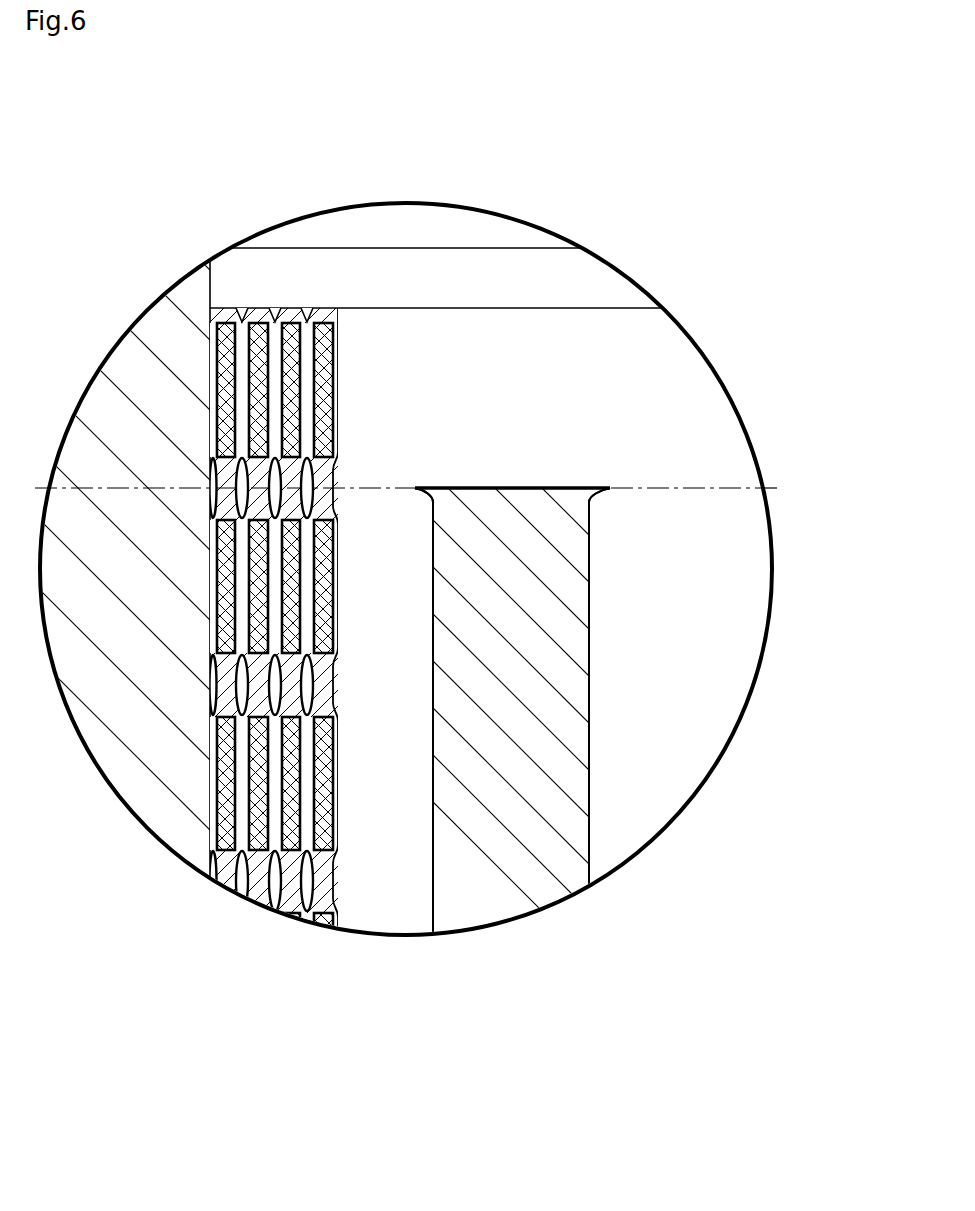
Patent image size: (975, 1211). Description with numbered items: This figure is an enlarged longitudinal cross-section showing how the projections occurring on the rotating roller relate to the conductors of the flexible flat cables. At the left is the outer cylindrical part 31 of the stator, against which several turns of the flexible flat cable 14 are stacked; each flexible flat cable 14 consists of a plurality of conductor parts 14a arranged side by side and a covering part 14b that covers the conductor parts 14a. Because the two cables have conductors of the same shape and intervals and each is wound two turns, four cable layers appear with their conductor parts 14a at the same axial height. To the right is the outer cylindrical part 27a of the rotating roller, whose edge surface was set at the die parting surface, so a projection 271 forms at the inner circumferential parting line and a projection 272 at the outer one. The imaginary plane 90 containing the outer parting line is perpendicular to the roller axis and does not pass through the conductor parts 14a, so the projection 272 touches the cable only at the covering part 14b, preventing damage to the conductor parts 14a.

The outer cylindrical part 31 is at (160, 325).
The flexible flat cable 14 is at (317, 614).
The conductor parts 14a is at (333, 800).
The covering part 14b is at (330, 895).
The imaginary plane 90 is at (366, 488).
The projection 272 is at (425, 488).
The projection 271 is at (600, 488).
The outer cylindrical part 27a is at (578, 692).